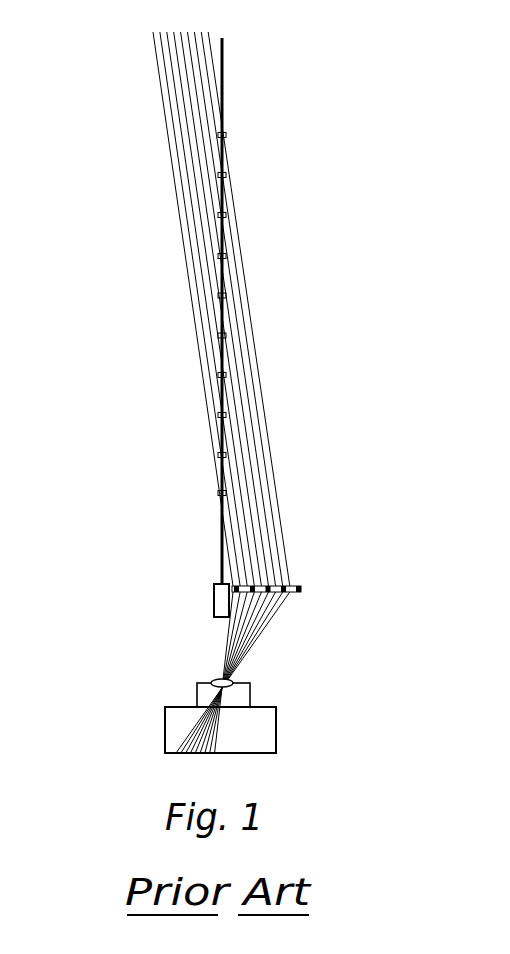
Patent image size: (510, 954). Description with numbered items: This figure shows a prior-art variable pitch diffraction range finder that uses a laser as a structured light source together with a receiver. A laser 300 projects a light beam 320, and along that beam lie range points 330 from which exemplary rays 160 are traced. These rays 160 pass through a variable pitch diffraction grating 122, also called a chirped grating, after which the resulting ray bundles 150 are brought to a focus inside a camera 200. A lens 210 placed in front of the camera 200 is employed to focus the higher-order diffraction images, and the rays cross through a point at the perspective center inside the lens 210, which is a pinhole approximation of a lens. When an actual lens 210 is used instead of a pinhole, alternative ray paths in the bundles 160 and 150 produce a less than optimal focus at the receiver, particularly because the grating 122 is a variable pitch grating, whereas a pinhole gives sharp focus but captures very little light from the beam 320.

The variable pitch diffraction grating 122 is at (304, 587).
The ray bundles 150 is at (222, 738).
The rays 160 is at (210, 410).
The camera 200 is at (165, 722).
The lens 210 is at (215, 678).
The laser 300 is at (213, 600).
The light beam 320 is at (224, 73).
The range points 330 is at (226, 215).